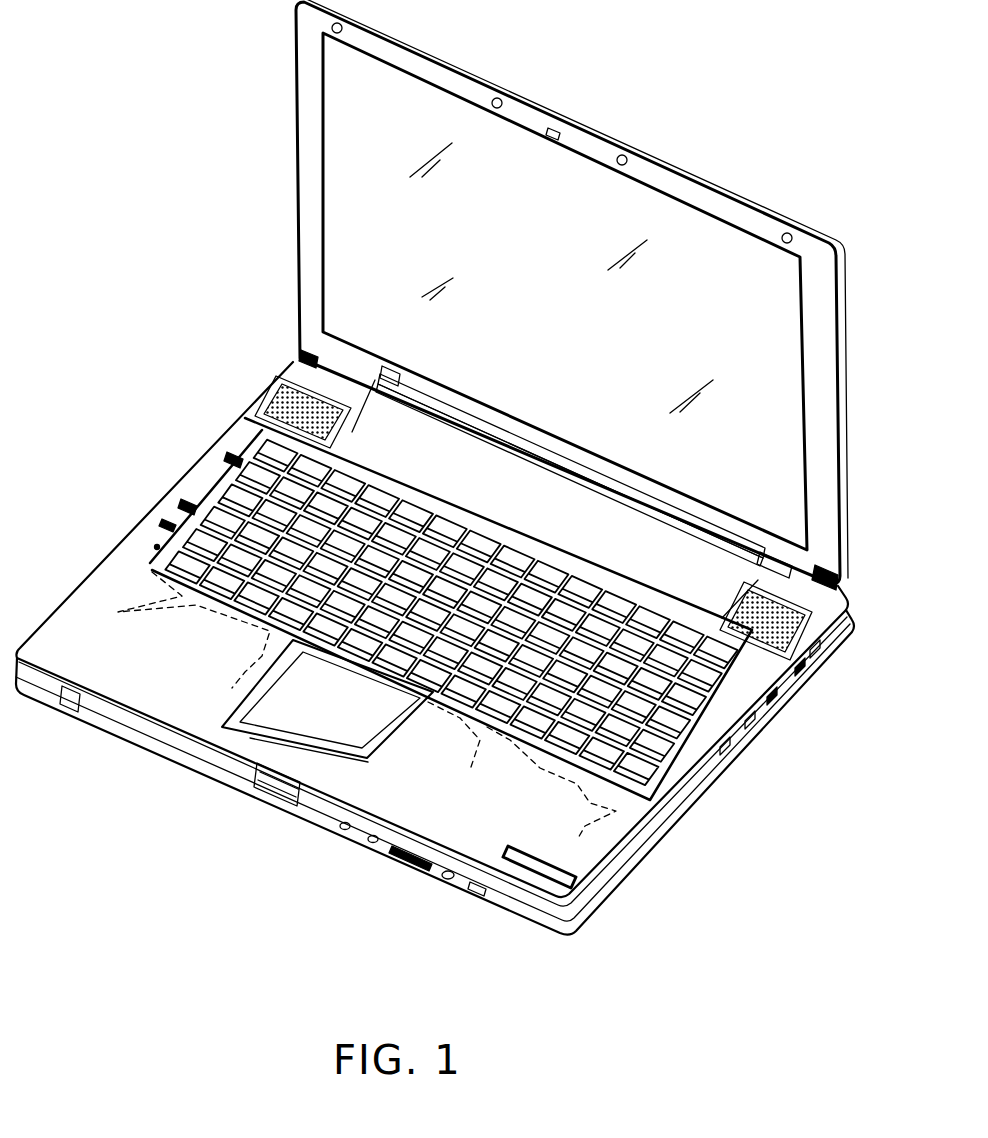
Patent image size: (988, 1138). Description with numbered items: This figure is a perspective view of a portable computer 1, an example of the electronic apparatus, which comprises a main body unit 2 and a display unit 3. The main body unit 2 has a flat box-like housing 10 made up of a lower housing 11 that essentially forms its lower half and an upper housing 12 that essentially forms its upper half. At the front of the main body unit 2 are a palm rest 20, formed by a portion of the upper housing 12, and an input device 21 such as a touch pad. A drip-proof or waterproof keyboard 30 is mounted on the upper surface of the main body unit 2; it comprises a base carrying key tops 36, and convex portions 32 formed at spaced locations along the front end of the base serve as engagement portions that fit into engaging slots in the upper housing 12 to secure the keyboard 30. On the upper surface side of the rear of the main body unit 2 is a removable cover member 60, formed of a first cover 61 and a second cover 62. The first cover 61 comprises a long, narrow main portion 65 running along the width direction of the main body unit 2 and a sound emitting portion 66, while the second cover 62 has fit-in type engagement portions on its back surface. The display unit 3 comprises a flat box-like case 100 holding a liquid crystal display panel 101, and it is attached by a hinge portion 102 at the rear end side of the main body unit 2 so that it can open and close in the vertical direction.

The portable computer 1 is at (204, 92).
The main body unit 2 is at (128, 507).
The display unit 3 is at (626, 115).
The housing 10 is at (645, 896).
The lower housing 11 is at (668, 825).
The upper housing 12 is at (748, 752).
The palm rest 20 is at (437, 833).
The input device 21 is at (350, 740).
The keyboard 30 is at (700, 795).
The convex portions 32 is at (354, 709).
The key tops 36 is at (610, 600).
The cover member 60 is at (467, 462).
The first cover 61 is at (602, 515).
The second cover 62 is at (806, 608).
The main portion 65 is at (522, 508).
The sound emitting portion 66 is at (303, 390).
The case 100 is at (717, 185).
The liquid crystal display panel 101 is at (423, 135).
The hinge portion 102 is at (347, 383).